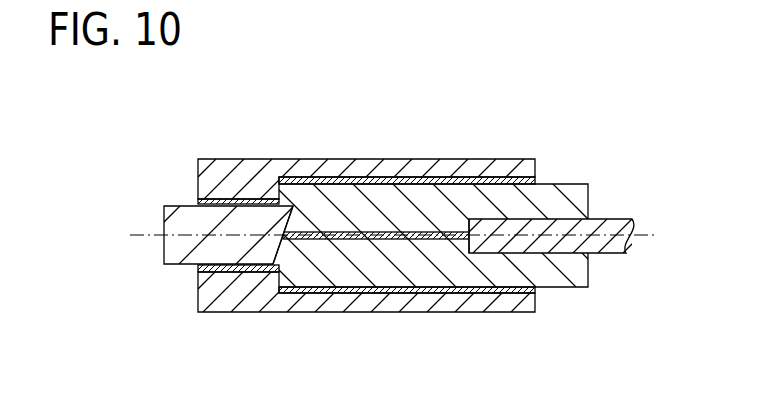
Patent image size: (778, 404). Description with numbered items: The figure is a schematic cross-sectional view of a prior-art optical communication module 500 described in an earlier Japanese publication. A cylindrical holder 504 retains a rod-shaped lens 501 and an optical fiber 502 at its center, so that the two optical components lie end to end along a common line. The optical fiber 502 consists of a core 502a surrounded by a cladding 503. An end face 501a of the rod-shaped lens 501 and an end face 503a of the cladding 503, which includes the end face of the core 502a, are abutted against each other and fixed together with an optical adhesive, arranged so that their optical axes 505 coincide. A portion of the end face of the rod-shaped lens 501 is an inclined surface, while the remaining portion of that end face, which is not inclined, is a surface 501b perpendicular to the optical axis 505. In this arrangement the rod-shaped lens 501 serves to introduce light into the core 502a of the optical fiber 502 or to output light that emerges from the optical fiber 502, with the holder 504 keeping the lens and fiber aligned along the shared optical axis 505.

The optical communication module 500 is at (296, 72).
The rod-shaped lens 501 is at (223, 222).
The end face of the rod-shaped lens 501a is at (282, 258).
The surface perpendicular to the optical axis 501b is at (302, 218).
The optical fiber 502 is at (562, 222).
The core of the optical fiber 502a is at (428, 213).
The cladding 503 is at (366, 192).
The end face of the cladding 503a is at (292, 182).
The cylindrical holder 504 is at (450, 305).
The optical axis 505 is at (133, 232).